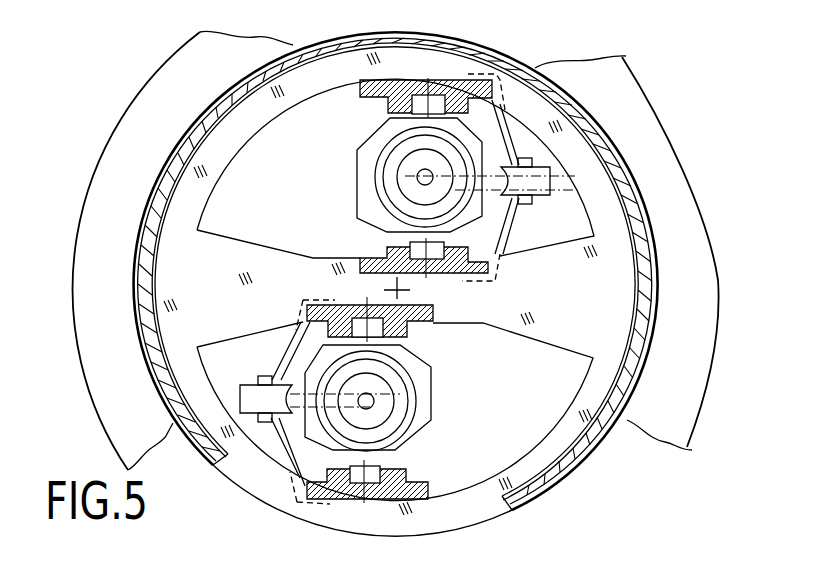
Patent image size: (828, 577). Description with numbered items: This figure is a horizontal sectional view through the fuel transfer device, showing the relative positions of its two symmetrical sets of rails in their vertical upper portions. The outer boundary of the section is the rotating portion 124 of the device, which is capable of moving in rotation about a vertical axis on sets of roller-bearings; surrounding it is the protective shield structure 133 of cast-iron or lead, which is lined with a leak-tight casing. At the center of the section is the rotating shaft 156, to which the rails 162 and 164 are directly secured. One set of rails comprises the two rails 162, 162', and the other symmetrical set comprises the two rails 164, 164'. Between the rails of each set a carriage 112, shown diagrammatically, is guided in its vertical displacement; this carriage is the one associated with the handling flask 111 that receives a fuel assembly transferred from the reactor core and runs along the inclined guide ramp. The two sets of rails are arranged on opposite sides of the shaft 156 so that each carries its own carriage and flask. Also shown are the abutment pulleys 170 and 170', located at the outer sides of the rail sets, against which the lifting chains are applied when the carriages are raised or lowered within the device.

The rotating portion 124 is at (523, 514).
The shield structure 133 is at (677, 145).
The rotating shaft 156 is at (396, 290).
The rail 164' is at (397, 105).
The rail 164 is at (393, 249).
The rail 162 is at (390, 328).
The rail 162' is at (385, 476).
The carriage 112 is at (360, 178).
The handling flask 111 is at (398, 158).
The abutment pulley 170' is at (493, 177).
The abutment pulley 170 is at (304, 404).